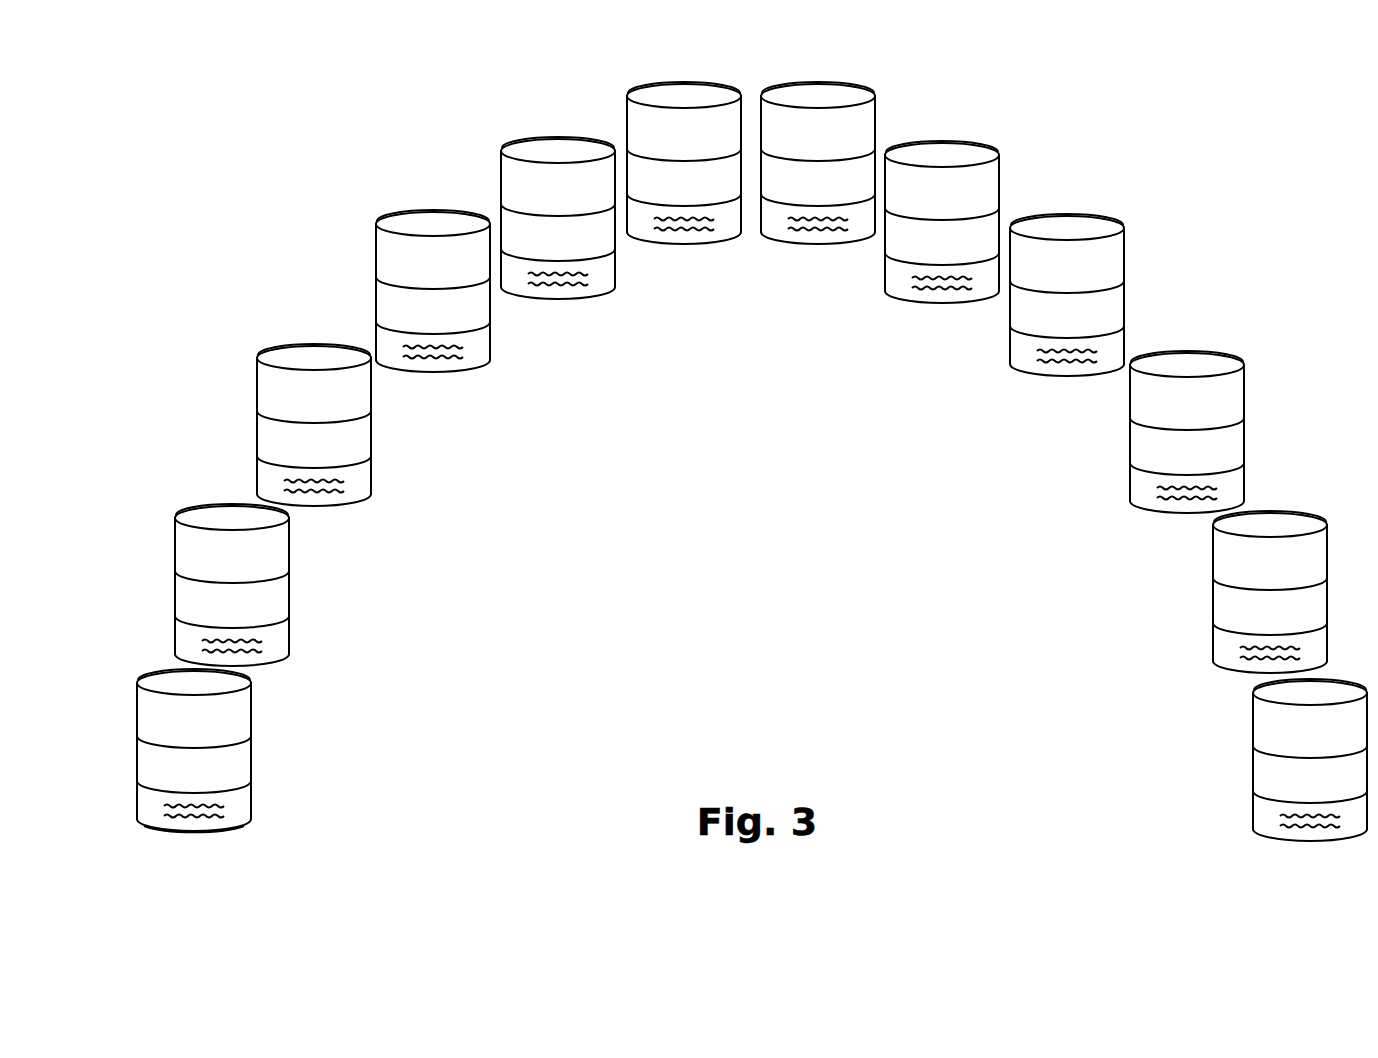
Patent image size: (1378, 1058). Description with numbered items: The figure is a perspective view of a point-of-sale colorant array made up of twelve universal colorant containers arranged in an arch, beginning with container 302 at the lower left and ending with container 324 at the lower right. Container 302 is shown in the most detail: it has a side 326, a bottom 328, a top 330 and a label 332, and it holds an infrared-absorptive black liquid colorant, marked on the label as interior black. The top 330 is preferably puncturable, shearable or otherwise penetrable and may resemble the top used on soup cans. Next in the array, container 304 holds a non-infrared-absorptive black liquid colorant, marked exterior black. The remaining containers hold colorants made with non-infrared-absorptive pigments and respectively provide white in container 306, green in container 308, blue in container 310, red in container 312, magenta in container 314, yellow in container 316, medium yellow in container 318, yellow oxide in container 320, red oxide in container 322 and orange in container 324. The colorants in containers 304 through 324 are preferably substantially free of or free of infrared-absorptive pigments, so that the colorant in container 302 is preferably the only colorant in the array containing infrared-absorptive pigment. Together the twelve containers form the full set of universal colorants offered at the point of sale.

The container 302 is at (144, 672).
The container 304 is at (180, 506).
The container 306 is at (266, 345).
The container 308 is at (383, 210).
The container 310 is at (518, 142).
The container 312 is at (648, 90).
The container 314 is at (870, 90).
The container 316 is at (970, 142).
The container 318 is at (1115, 215).
The container 320 is at (1238, 352).
The container 322 is at (1312, 514).
The container 324 is at (1352, 680).
The side 326 is at (251, 805).
The bottom 328 is at (206, 829).
The top 330 is at (236, 686).
The label 332 is at (246, 768).